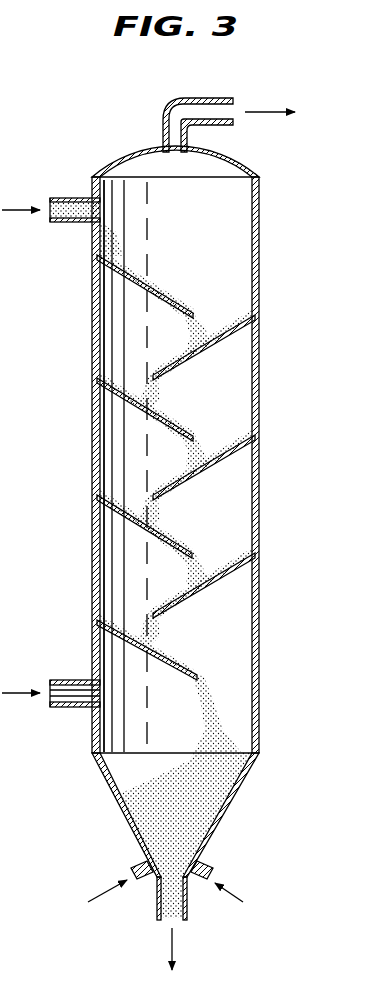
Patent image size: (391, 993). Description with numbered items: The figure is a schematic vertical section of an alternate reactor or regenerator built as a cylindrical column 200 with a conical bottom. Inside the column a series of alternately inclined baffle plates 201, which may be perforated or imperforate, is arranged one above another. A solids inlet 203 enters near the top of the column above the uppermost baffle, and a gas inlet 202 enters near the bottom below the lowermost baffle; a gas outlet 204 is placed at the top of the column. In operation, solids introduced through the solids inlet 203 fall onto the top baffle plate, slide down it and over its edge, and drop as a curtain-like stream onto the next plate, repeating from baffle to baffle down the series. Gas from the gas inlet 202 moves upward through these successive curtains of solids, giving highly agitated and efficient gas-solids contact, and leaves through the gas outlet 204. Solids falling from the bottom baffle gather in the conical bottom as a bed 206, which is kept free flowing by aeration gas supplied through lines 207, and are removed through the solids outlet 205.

The cylindrical column 200 is at (262, 456).
The alternately inclined baffle plates 201 is at (163, 303).
The gas inlet 202 is at (73, 681).
The solids inlet 203 is at (71, 198).
The gas outlet 204 is at (177, 117).
The solids outlet 205 is at (185, 902).
The bed 206 is at (197, 795).
The aeration gas lines 207 is at (139, 863).